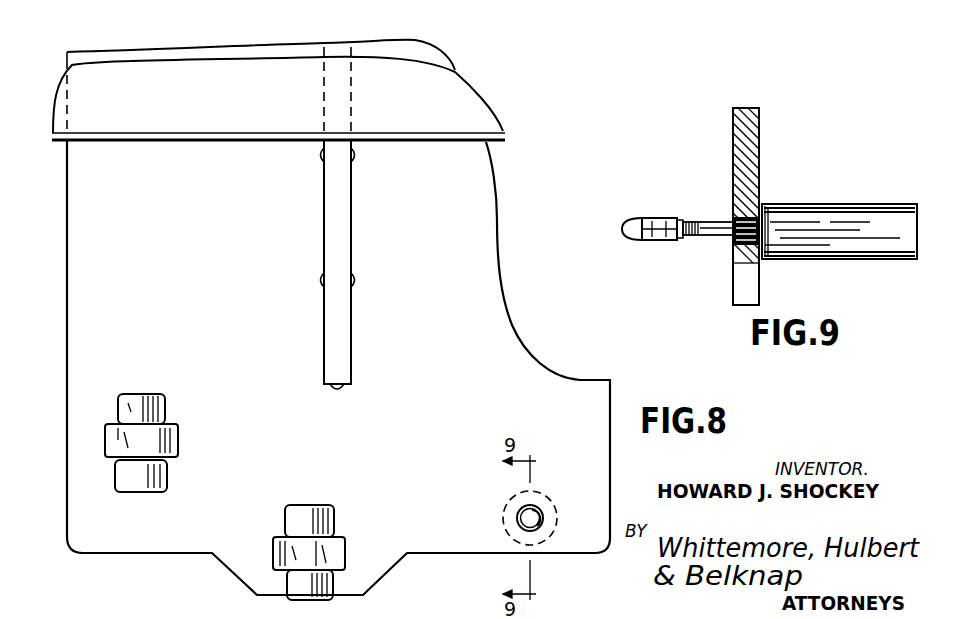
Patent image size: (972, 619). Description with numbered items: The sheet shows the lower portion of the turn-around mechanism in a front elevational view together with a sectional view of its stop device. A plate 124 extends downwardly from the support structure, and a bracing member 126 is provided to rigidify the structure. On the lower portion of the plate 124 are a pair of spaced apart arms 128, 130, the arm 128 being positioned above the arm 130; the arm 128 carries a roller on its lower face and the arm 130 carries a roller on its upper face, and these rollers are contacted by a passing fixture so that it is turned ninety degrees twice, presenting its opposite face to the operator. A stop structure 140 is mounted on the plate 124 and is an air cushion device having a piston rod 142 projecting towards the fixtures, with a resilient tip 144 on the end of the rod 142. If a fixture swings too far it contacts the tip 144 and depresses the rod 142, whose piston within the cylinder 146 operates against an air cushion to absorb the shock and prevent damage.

In FIG. 8, the plate 124 is at (490, 184).
In FIG. 9, the plate 124 is at (758, 142).
In FIG. 8, the bracing member 126 is at (345, 243).
In FIG. 8, the arm 128 is at (178, 443).
In FIG. 8, the arm 130 is at (342, 548).
In FIG. 8, the stop structure 140 is at (503, 513).
In FIG. 9, the stop structure 140 is at (695, 212).
In FIG. 9, the piston rod 142 is at (713, 238).
In FIG. 9, the resilient tip 144 is at (629, 241).
In FIG. 9, the cylinder 146 is at (831, 210).